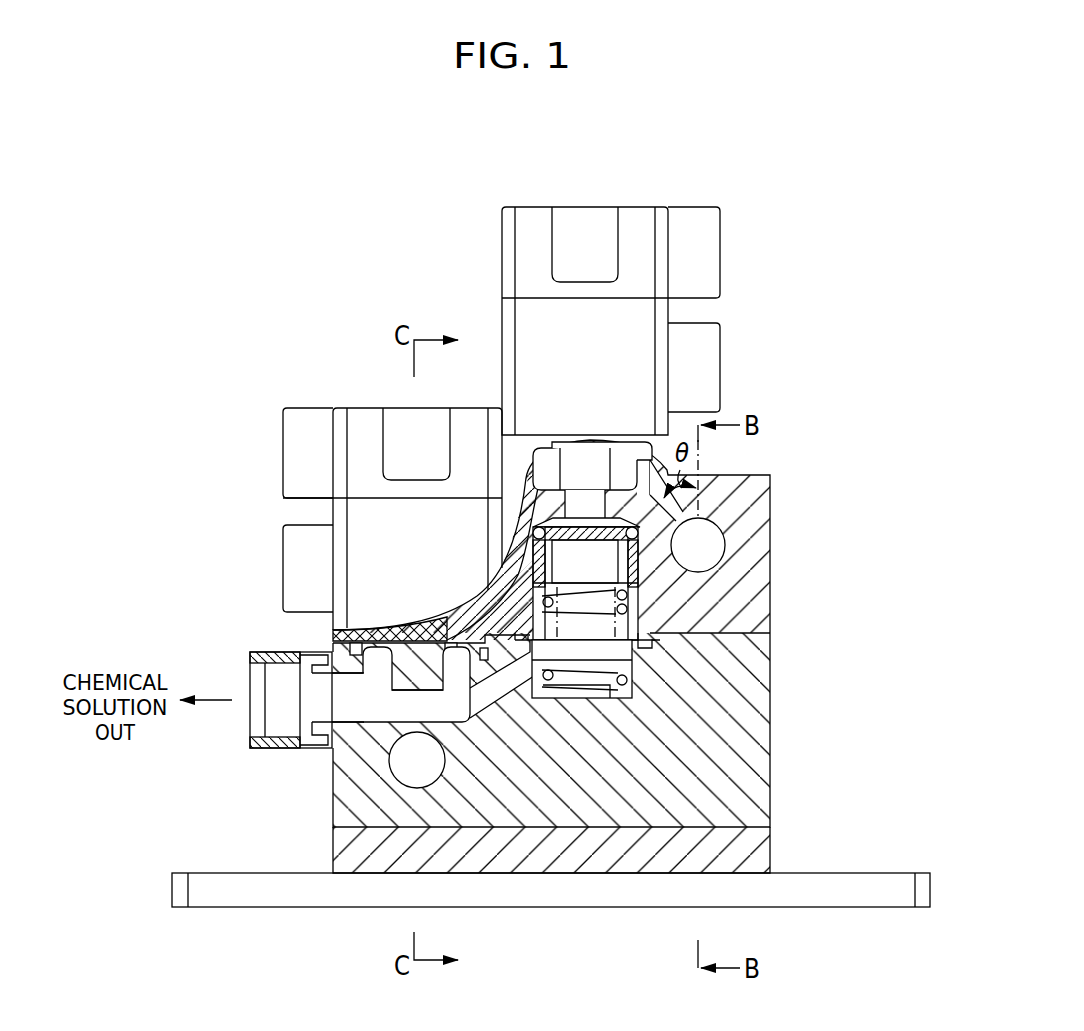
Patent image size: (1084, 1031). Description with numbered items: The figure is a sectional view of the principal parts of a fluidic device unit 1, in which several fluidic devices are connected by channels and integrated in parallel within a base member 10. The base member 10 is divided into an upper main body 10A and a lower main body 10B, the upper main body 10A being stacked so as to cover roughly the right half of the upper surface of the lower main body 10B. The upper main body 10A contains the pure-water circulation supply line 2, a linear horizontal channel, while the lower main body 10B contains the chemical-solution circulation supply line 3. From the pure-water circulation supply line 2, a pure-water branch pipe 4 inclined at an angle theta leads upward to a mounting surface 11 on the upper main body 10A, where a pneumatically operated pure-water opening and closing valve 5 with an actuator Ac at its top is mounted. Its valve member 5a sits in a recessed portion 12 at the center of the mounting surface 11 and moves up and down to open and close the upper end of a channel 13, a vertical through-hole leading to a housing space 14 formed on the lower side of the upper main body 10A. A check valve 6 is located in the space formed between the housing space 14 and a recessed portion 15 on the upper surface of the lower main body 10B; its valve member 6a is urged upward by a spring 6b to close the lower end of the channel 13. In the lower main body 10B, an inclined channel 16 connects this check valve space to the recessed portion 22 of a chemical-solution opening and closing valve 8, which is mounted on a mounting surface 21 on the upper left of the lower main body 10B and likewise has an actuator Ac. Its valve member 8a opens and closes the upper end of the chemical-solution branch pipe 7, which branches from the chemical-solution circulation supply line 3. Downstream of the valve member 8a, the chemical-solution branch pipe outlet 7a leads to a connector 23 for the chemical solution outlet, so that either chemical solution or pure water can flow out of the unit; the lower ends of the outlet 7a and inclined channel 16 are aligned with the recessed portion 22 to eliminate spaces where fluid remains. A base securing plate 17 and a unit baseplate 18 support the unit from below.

The fluidic device unit 1 is at (750, 145).
The pure-water circulation supply line 2 is at (712, 552).
The chemical-solution circulation supply line 3 is at (408, 768).
The pure-water branch pipe 4 is at (680, 513).
The pure-water opening and closing valve 5 is at (640, 348).
The valve member 5a is at (577, 463).
The check valve 6 is at (584, 645).
The valve member 6a is at (550, 553).
The spring 6b is at (622, 686).
The chemical-solution branch pipe 7 is at (405, 720).
The chemical-solution branch pipe outlet 7a is at (310, 690).
The chemical-solution opening and closing valve 8 is at (362, 512).
The valve member 8a is at (415, 650).
The base member 10 is at (601, 622).
The upper main body 10A is at (775, 618).
The lower main body 10B is at (775, 725).
The mounting surface 11 is at (645, 465).
The recessed portion 12 is at (618, 463).
The channel 13 is at (580, 502).
The housing space 14 is at (597, 558).
The recessed portion 15 is at (638, 652).
The inclined channel 16 is at (505, 700).
The base securing plate 17 is at (765, 861).
The unit baseplate 18 is at (905, 873).
The mounting surface 21 is at (357, 657).
The recessed portion 22 is at (372, 700).
The connector 23 is at (250, 733).
The actuator Ac is at (636, 223).